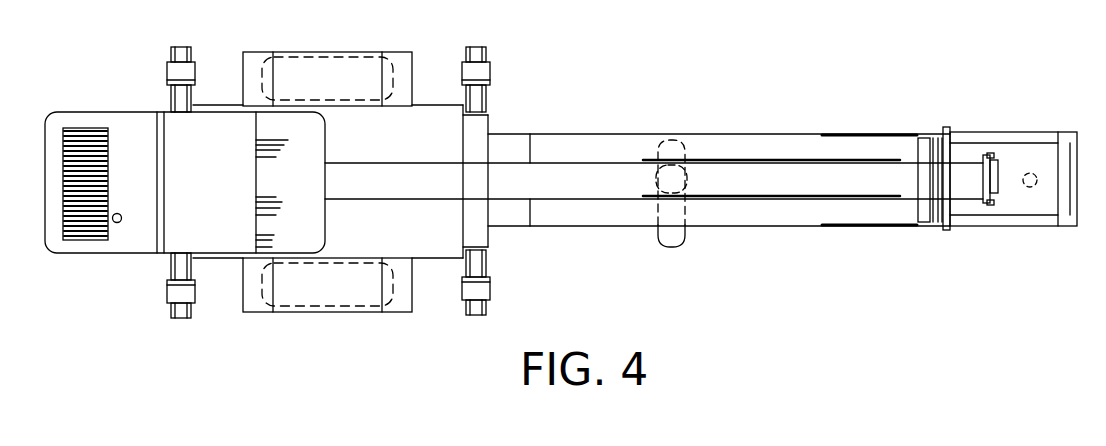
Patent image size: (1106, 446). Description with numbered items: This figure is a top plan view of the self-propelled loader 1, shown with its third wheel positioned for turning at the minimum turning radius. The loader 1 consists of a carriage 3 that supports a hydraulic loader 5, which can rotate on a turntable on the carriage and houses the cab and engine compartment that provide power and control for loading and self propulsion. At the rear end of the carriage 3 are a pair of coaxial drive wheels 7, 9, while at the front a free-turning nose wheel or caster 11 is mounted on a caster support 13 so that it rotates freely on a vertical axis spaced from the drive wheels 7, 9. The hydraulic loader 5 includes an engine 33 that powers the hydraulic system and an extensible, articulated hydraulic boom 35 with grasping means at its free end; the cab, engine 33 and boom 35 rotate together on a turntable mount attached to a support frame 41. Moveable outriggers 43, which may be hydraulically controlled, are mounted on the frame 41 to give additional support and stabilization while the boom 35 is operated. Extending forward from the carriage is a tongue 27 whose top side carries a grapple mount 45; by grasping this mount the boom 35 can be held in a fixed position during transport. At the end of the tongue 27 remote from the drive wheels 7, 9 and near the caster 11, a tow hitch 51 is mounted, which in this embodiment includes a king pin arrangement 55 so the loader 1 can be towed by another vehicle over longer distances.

The self-propelled loader 1 is at (565, 182).
The carriage 3 is at (577, 134).
The hydraulic loader 5 is at (146, 118).
The drive wheel 7 is at (350, 287).
The drive wheel 9 is at (335, 65).
The nose wheel or caster 11 is at (672, 240).
The caster support 13 is at (695, 153).
The tongue 27 is at (749, 210).
The engine 33 is at (120, 242).
The hydraulic boom 35 is at (778, 173).
The support frame 41 is at (438, 243).
The outriggers 43 is at (192, 77).
The grapple mount 45 is at (920, 150).
The tow hitch 51 is at (1043, 138).
The king pin arrangement 55 is at (1023, 233).